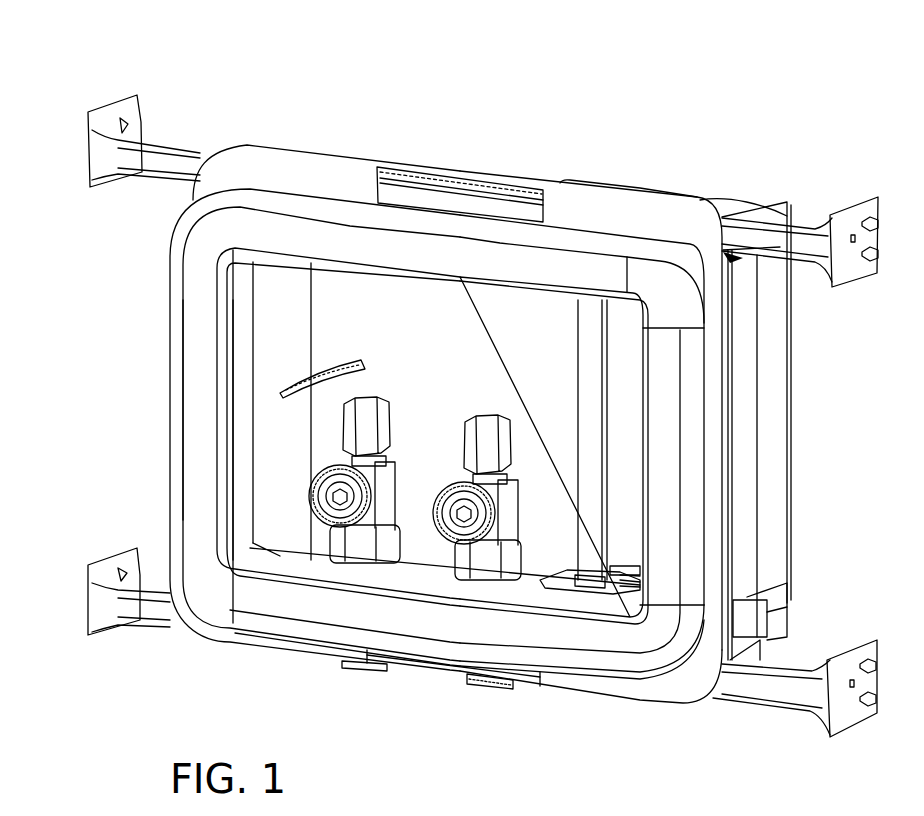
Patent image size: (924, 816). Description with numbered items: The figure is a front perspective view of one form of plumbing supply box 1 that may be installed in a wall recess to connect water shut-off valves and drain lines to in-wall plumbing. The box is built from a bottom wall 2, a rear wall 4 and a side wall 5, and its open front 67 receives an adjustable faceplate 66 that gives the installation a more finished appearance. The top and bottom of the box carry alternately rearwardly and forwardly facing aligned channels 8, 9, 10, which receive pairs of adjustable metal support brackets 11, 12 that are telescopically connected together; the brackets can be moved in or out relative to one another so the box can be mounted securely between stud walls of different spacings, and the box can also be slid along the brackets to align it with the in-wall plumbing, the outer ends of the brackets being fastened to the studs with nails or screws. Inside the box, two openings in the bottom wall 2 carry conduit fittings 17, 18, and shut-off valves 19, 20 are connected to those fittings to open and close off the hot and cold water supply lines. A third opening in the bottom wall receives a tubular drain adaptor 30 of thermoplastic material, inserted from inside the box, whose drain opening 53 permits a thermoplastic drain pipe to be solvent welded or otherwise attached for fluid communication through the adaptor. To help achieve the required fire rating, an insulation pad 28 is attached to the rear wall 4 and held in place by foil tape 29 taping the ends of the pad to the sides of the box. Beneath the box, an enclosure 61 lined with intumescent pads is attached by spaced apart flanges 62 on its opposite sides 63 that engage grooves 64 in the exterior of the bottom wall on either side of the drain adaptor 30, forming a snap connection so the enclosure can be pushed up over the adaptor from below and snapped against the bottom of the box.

The plumbing supply box 1 is at (446, 418).
The bottom wall 2 is at (540, 565).
The rear wall 4 is at (522, 440).
The side wall 5 is at (270, 430).
The channel 8 is at (275, 160).
The channel 9 is at (453, 177).
The channel 10 is at (612, 213).
The adjustable metal support bracket 11 is at (103, 142).
The adjustable metal support bracket 12 is at (498, 207).
The conduit fitting 17 is at (395, 537).
The conduit fitting 18 is at (517, 550).
The shut-off valve 19 is at (390, 473).
The shut-off valve 20 is at (510, 490).
The insulation pad 28 is at (773, 353).
The foil tape 29 is at (763, 207).
The tubular drain adaptor 30 is at (633, 569).
The drain opening 53 is at (618, 550).
The enclosure 61 is at (779, 628).
The flange 62 is at (745, 600).
The side of the enclosure 63 is at (745, 650).
The groove 64 is at (742, 603).
The adjustable faceplate 66 is at (197, 495).
The open front 67 is at (237, 365).